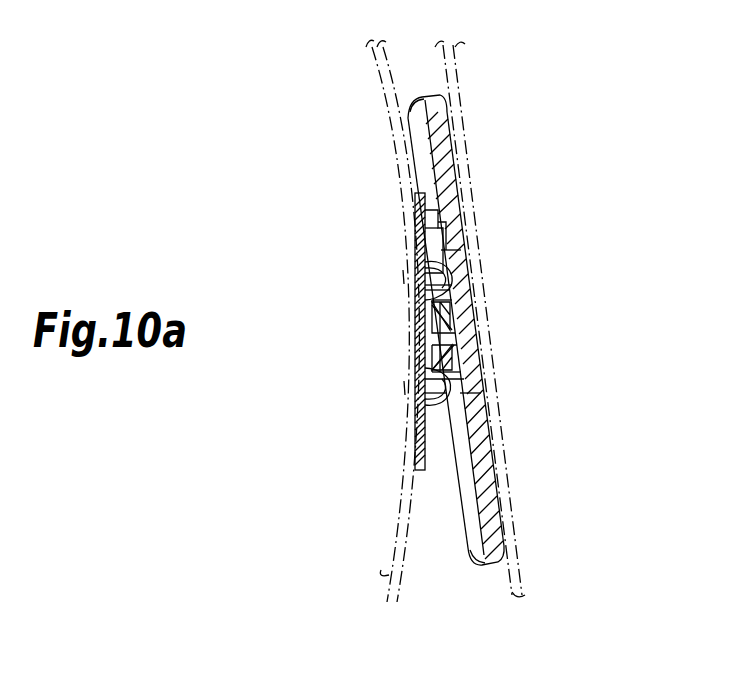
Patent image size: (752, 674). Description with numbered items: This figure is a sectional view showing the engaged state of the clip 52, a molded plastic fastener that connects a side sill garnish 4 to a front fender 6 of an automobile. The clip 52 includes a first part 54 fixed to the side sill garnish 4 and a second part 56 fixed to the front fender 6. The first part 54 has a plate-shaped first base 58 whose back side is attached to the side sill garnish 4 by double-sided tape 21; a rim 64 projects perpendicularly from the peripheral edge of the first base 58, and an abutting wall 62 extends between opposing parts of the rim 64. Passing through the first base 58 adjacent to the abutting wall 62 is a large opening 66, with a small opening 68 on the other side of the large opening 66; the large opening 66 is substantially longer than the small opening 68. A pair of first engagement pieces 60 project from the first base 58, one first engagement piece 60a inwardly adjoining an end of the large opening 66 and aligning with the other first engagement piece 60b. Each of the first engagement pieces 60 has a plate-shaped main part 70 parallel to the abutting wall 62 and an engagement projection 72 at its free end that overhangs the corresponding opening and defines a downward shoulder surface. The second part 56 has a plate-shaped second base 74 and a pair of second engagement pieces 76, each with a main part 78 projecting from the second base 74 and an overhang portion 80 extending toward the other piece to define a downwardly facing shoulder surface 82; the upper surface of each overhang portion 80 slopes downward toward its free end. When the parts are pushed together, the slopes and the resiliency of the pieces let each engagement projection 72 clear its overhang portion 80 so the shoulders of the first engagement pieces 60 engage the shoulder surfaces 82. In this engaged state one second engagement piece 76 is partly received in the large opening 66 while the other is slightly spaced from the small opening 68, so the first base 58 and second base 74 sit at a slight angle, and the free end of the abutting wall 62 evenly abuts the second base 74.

The clip 52 is at (430, 82).
The first part 54 is at (450, 115).
The first base 58 is at (448, 160).
The rim 64 is at (421, 100).
The second part 56 is at (400, 191).
The second base 74 is at (420, 233).
The abutting wall 62 is at (446, 222).
The large opening 66 is at (466, 256).
The small opening 68 is at (485, 393).
The overhang portion 80 is at (437, 277).
The main part of second engagement piece 78 is at (398, 273).
The second engagement piece 76 is at (396, 278).
The engagement projection 72 is at (447, 283).
The main part of first engagement piece 70 is at (455, 308).
The shoulder surface 82 is at (425, 352).
The first engagement pieces 60 is at (630, 296).
The one first engagement piece 60a is at (455, 340).
The other first engagement piece 60b is at (455, 352).
The front fender 6 is at (398, 510).
The side sill garnish 4 is at (515, 513).
The double-sided tape 21 is at (418, 478).